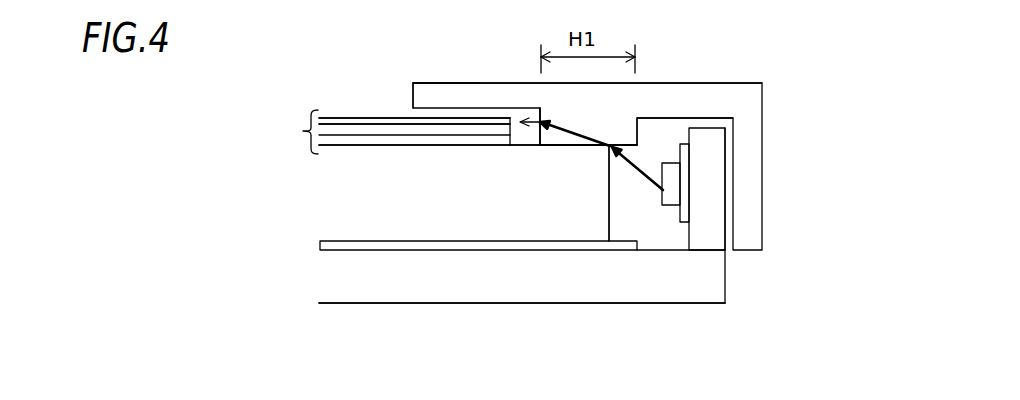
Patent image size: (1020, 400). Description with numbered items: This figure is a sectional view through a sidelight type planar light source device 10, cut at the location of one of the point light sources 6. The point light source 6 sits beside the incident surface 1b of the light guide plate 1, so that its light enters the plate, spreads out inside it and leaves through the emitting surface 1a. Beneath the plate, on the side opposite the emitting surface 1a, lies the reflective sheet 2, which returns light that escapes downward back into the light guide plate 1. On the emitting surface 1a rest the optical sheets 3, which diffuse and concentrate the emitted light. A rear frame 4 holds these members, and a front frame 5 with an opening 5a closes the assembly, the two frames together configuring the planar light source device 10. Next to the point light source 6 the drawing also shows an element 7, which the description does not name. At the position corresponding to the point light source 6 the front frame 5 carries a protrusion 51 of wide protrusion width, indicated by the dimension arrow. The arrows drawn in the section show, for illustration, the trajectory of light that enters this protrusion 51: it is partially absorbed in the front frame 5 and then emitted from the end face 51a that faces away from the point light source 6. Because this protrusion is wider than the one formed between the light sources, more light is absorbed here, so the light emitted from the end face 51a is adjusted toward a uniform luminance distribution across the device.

The light guide plate 1 is at (480, 225).
The emitting surface 1a is at (364, 137).
The incident surface 1b is at (610, 237).
The reflective sheet 2 is at (562, 247).
The optical sheets 3 is at (456, 132).
The rear frame 4 is at (707, 295).
The front frame 5 is at (740, 183).
The opening 5a is at (400, 98).
The protrusion 51 is at (617, 110).
The end face 51a is at (540, 120).
The point light sources 6 is at (673, 178).
The reflector / light source board 7 is at (683, 187).
The planar light source device 10 is at (713, 315).